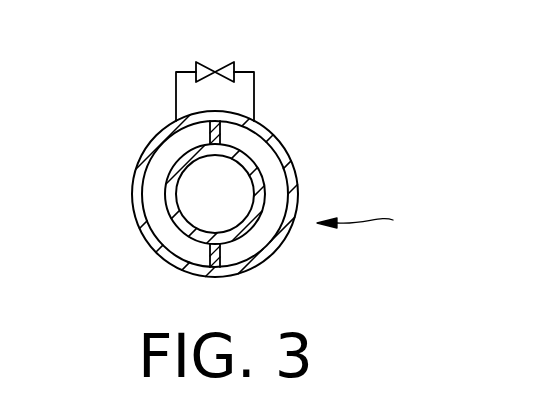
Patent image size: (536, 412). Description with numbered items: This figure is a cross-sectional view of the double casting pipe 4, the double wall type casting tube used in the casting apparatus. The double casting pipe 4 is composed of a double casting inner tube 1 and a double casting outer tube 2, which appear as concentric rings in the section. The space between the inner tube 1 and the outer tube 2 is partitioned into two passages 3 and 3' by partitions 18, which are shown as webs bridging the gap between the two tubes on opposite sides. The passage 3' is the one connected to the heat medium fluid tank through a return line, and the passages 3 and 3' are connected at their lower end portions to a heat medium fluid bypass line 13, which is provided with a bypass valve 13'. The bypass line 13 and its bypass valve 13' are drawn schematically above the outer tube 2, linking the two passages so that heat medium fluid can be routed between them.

The double casting inner tube 1 is at (260, 137).
The double casting outer tube 2 is at (162, 257).
The passage 3 is at (266, 194).
The passage 3' is at (169, 194).
The double casting pipe 4 is at (366, 223).
The heat medium fluid bypass line 13 is at (259, 88).
The bypass valve 13' is at (253, 51).
The partition 18 is at (222, 253).